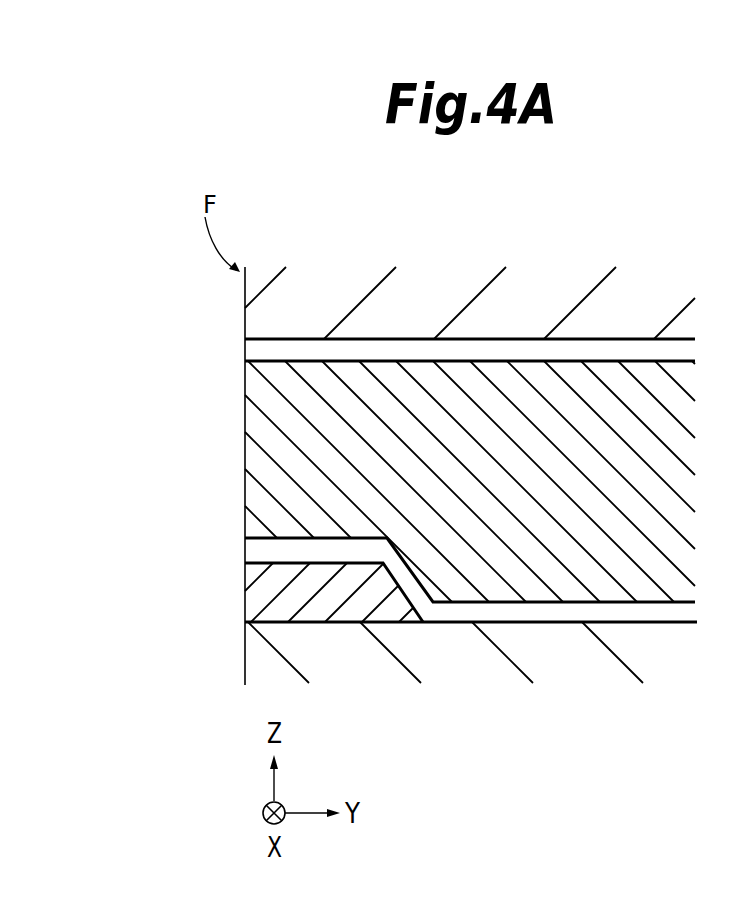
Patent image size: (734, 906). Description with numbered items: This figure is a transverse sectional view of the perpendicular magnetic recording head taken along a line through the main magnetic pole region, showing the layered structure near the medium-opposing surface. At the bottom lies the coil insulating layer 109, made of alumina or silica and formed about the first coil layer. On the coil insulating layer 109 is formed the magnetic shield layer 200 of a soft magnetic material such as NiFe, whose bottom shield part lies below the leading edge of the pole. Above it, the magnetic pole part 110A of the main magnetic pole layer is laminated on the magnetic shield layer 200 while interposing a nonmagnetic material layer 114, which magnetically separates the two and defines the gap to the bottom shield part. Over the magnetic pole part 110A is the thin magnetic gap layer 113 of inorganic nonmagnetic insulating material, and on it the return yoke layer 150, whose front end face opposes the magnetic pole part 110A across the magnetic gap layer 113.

The return yoke layer 150 is at (300, 313).
The magnetic gap layer 113 is at (300, 347).
The magnetic pole part 110A is at (312, 432).
The nonmagnetic material layer 114 is at (258, 553).
The magnetic shield layer 200 is at (307, 607).
The coil insulating layer 109 is at (273, 673).